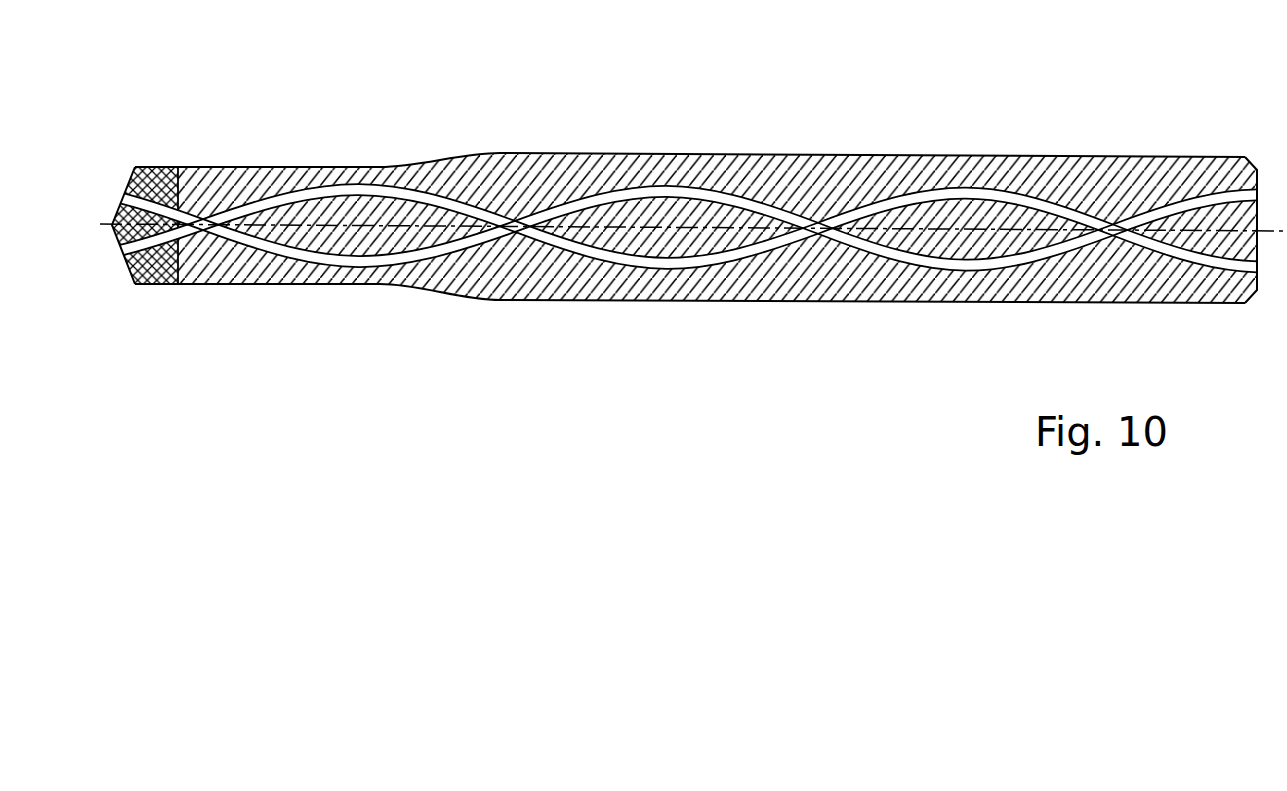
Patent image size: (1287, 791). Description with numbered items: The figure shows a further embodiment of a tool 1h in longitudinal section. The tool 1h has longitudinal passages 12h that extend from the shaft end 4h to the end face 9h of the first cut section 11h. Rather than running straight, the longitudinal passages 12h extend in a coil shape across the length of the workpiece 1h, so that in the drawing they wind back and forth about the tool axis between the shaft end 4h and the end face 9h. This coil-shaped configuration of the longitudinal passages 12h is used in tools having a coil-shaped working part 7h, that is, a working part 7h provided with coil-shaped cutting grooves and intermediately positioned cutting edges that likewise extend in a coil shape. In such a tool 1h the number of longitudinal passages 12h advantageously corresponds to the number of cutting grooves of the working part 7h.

The tool 1h is at (795, 138).
The shaft end 4h is at (1260, 178).
The coil-shaped working part 7h is at (272, 157).
The end face 9h is at (127, 167).
The first cut section 11h is at (162, 168).
The longitudinal passages 12h is at (942, 195).